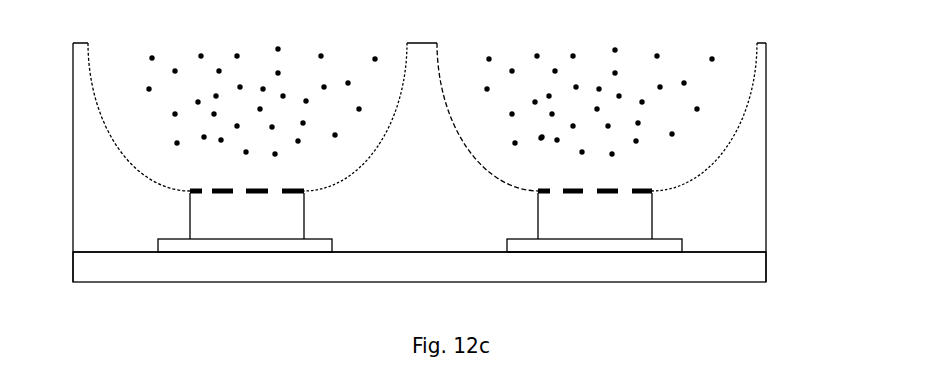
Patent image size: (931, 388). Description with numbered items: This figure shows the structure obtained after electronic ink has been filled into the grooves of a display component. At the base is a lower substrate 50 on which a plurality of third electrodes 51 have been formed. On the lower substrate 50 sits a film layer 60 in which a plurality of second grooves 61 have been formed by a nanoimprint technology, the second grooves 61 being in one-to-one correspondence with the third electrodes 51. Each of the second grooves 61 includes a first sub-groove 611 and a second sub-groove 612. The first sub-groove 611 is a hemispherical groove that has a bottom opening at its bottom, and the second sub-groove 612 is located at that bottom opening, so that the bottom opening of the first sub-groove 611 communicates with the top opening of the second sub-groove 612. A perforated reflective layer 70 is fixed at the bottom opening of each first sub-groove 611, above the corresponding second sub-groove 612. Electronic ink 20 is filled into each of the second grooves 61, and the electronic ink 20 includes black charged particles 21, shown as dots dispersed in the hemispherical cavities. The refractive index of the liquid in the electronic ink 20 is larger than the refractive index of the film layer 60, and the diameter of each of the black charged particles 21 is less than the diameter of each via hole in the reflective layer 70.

The electronic ink 20 is at (711, 89).
The black charged particles 21 is at (712, 59).
The lower substrate 50 is at (750, 267).
The third electrodes 51 is at (583, 243).
The film layer 60 is at (100, 138).
The second grooves 61 is at (530, 141).
The first sub-groove 611 is at (720, 145).
The second sub-groove 612 is at (643, 212).
The perforated reflective layer 70 is at (190, 191).